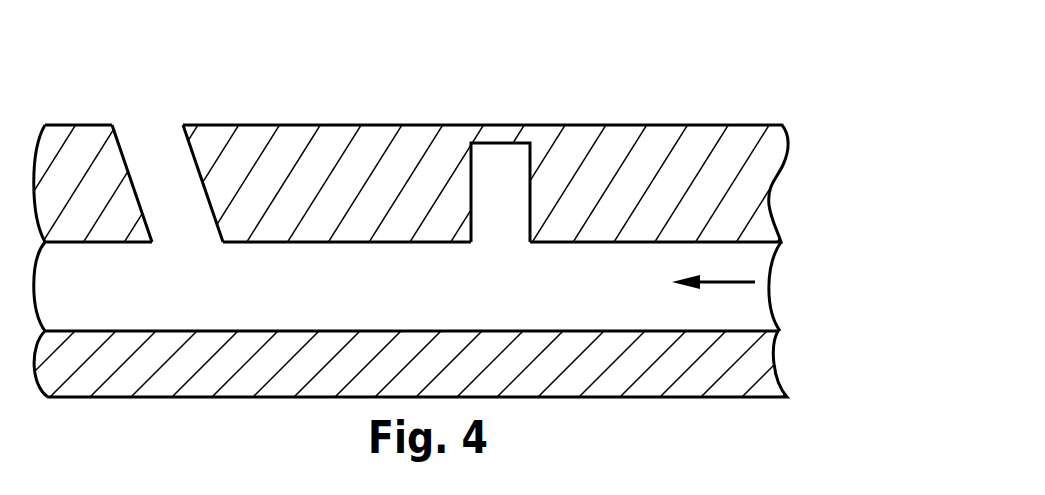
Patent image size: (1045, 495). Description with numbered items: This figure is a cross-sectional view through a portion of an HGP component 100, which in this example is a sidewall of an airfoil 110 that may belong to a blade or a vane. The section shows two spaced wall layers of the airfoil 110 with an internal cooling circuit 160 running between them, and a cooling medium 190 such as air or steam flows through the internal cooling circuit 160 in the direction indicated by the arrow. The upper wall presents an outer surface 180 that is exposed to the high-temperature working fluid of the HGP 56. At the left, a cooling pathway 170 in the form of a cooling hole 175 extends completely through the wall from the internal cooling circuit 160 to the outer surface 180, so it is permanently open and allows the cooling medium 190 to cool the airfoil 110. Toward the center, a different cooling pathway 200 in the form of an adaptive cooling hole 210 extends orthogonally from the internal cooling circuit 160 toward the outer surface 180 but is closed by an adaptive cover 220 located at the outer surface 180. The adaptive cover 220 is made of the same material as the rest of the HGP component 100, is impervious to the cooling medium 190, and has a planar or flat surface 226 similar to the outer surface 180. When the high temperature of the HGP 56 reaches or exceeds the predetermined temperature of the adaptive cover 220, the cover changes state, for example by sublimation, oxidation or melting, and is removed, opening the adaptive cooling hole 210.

The HGP component 100 is at (802, 131).
The airfoil 110 is at (757, 195).
The internal cooling circuit 160 is at (643, 295).
The cooling pathway 170 is at (153, 140).
The cooling hole 175 is at (182, 213).
The outer surface 180 is at (90, 125).
The cooling medium 190 is at (735, 282).
The cooling pathway 200 is at (527, 123).
The adaptive cooling hole 210 is at (502, 203).
The adaptive cover 220 is at (483, 135).
The HGP 56 is at (420, 22).
The flat surface 226 is at (500, 124).